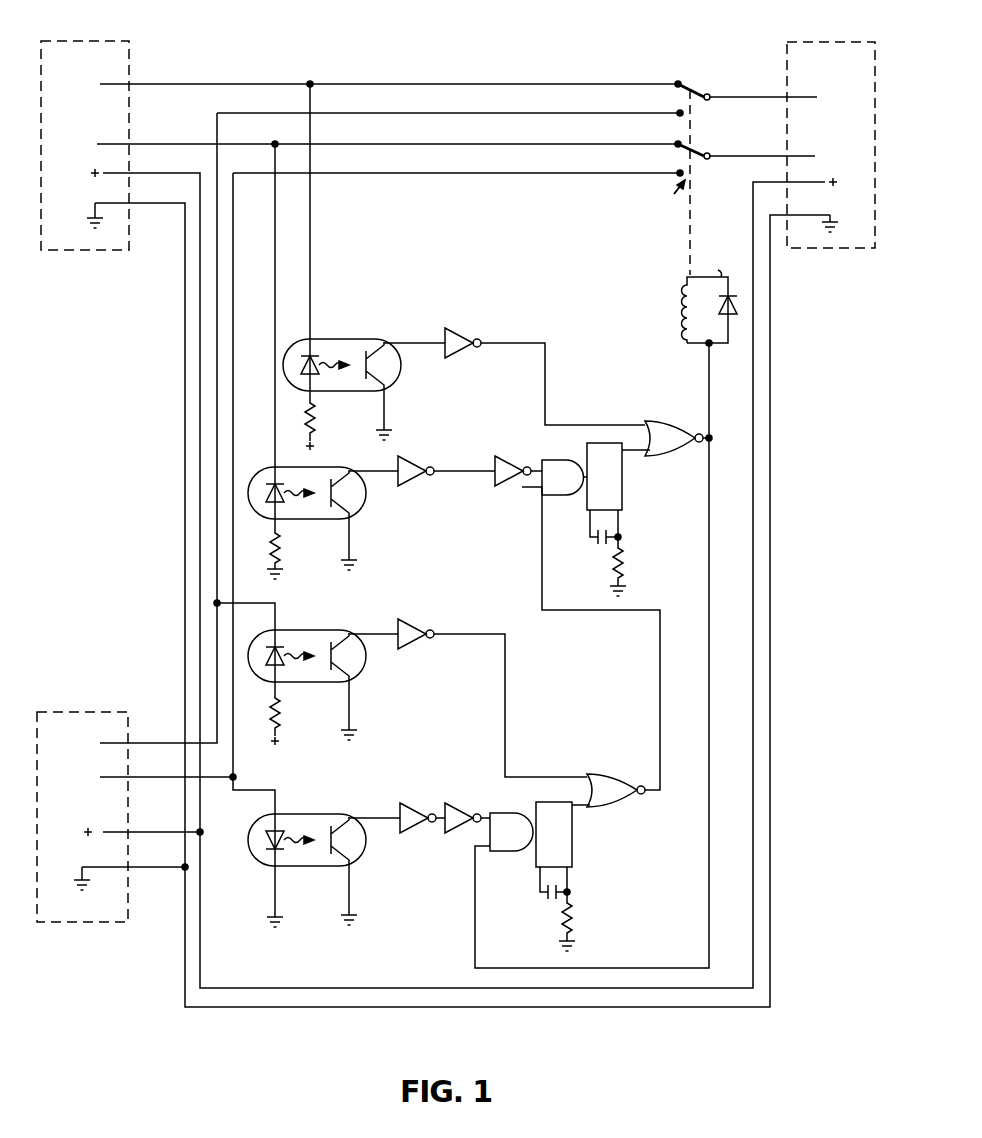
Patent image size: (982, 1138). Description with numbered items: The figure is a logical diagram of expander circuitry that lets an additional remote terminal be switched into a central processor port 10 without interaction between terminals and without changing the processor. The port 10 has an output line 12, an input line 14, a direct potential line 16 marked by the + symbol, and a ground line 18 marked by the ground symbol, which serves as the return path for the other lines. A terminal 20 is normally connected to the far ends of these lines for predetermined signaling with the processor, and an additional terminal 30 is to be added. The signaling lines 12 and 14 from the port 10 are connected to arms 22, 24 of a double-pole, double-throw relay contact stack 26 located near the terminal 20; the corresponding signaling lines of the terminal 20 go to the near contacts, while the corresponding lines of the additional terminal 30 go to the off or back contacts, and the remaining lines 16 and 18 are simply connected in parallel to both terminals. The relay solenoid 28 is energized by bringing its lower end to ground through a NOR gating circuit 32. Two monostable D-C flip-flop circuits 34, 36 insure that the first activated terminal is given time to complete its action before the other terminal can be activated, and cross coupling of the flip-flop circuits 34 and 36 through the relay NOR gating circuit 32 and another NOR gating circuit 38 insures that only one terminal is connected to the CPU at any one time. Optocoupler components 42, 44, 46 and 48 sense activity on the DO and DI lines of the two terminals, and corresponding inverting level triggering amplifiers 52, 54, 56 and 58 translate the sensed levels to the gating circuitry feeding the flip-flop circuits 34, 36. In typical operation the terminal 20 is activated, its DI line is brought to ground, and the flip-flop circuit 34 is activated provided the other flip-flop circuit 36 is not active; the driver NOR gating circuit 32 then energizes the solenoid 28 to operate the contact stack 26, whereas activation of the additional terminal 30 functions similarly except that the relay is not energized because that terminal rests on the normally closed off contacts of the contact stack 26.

The port 10 is at (832, 248).
The output line 12 is at (168, 83).
The input line 14 is at (168, 143).
The direct potential line 16 is at (168, 172).
The ground line 18 is at (168, 202).
The terminal 20 is at (72, 250).
The arm 22 is at (702, 77).
The arm 24 is at (698, 151).
The relay contact stack 26 is at (674, 182).
The solenoid 28 is at (685, 312).
The additional terminal 30 is at (75, 922).
The NOR gating circuit 32 is at (664, 424).
The monostable flip-flop circuit 34 is at (623, 477).
The monostable flip-flop circuit 36 is at (573, 839).
The NOR gating circuit 38 is at (609, 776).
The optocoupler component 42 is at (333, 342).
The optocoupler component 44 is at (299, 520).
The optocoupler component 46 is at (295, 685).
The optocoupler component 48 is at (295, 866).
The inverting level triggering amplifier 52 is at (454, 331).
The inverting level triggering amplifier 54 is at (409, 461).
The inverting level triggering amplifier 56 is at (404, 621).
The inverting level triggering amplifier 58 is at (404, 806).